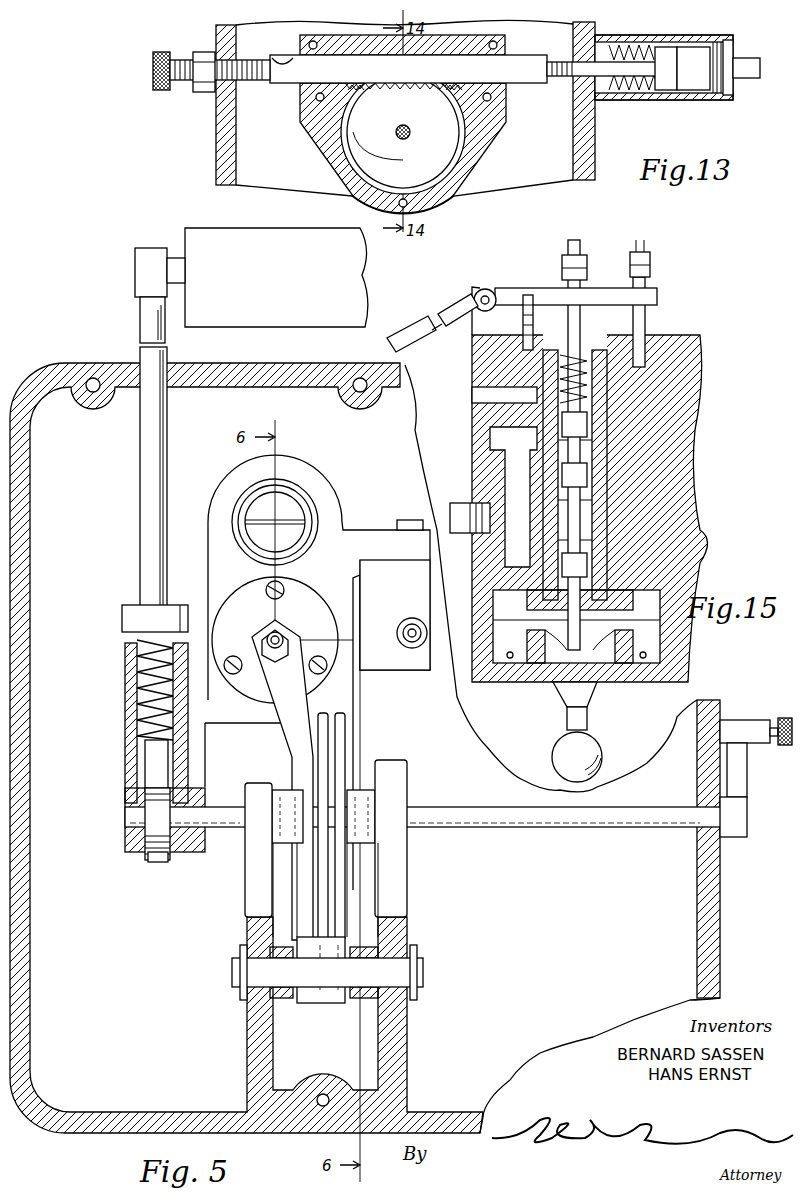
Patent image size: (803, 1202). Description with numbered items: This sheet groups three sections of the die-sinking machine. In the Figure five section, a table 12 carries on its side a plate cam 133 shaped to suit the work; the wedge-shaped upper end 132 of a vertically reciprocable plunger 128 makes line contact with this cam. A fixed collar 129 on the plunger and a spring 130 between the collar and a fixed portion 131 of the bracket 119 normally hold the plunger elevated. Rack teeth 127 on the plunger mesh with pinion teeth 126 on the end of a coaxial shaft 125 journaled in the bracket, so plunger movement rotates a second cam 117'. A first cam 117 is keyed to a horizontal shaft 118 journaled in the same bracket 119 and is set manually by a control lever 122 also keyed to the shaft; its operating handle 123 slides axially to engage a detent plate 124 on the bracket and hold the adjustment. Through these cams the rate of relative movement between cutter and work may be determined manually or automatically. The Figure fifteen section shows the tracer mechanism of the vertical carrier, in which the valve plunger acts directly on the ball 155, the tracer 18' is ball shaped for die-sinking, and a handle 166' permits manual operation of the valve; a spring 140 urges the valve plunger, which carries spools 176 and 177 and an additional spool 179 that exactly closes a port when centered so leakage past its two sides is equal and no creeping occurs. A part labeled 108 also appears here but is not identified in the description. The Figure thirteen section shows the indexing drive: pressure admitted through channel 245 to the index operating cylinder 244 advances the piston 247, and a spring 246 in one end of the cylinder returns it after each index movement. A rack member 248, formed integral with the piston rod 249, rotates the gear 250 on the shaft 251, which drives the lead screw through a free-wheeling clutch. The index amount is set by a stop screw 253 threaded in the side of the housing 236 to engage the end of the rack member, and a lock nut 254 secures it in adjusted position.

In FIG. 5, the table 12 is at (240, 248).
In FIG. 5, the plate cam 133 is at (146, 275).
In FIG. 5, the wedge shaped upper end 132 is at (144, 318).
In FIG. 5, the fixed collar 129 is at (122, 617).
In FIG. 5, the spring 130 is at (132, 669).
In FIG. 5, the fixed portion of the bracket 131 is at (133, 732).
In FIG. 5, the vertically reciprocable plunger 128 is at (152, 768).
In FIG. 5, the pinion teeth 126 is at (122, 824).
In FIG. 5, the rack teeth 127 is at (156, 862).
In FIG. 5, the coaxial shaft 125 is at (233, 838).
In FIG. 5, the cam 117 is at (331, 780).
In FIG. 5, the second cam 117' is at (363, 826).
In FIG. 5, the horizontal shaft 118 is at (468, 813).
In FIG. 5, the bracket 119 is at (66, 1131).
In FIG. 5, the operating handle 123 is at (785, 715).
In FIG. 5, the detent plate 124 is at (719, 726).
In FIG. 5, the control lever 122 is at (738, 780).
In FIG. 15, the tracer 18' is at (593, 757).
In FIG. 15, the spring 140 is at (588, 380).
In FIG. 15, the spool 176 is at (582, 427).
In FIG. 15, the spool 177 is at (580, 470).
In FIG. 15, the additional spool 179 is at (580, 520).
In FIG. 15, the plunger 108 is at (460, 506).
In FIG. 15, the handle 166' is at (432, 335).
In FIG. 15, the ball 155 is at (560, 688).
In FIG. 13, the stop screw 253 is at (202, 60).
In FIG. 13, the lock nut 254 is at (204, 86).
In FIG. 13, the housing 236 is at (226, 152).
In FIG. 13, the shaft 251 is at (372, 152).
In FIG. 13, the gear 250 is at (440, 135).
In FIG. 13, the rack member 248 is at (520, 73).
In FIG. 13, the piston rod 249 is at (565, 67).
In FIG. 13, the spring 246 is at (600, 98).
In FIG. 13, the piston 247 is at (666, 92).
In FIG. 13, the index operating cylinder 244 is at (693, 92).
In FIG. 13, the channel 245 is at (746, 82).